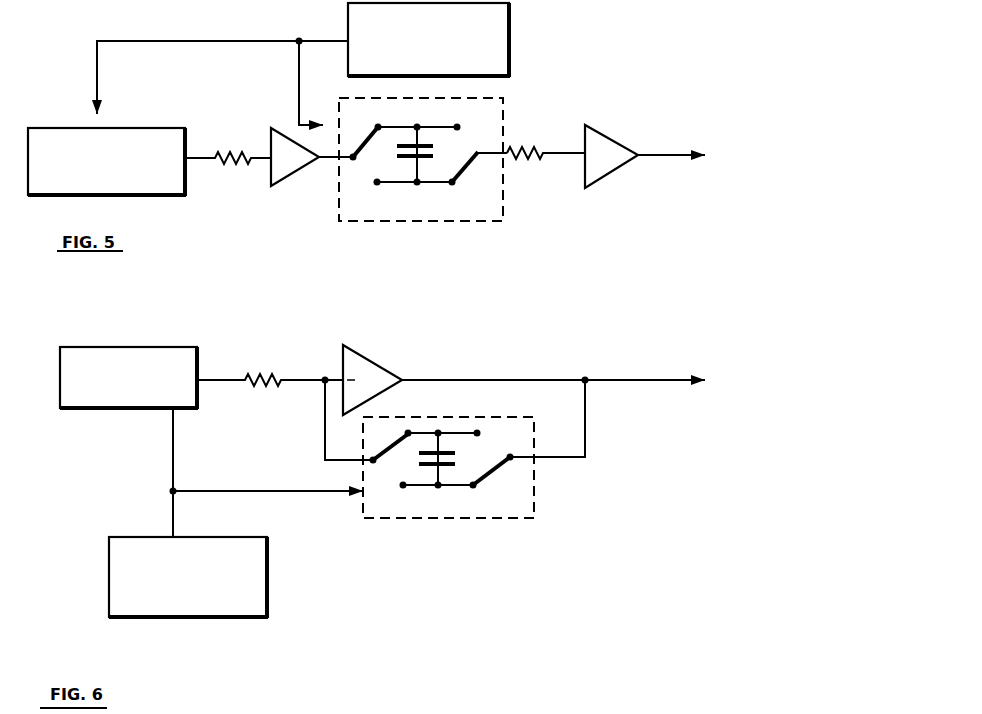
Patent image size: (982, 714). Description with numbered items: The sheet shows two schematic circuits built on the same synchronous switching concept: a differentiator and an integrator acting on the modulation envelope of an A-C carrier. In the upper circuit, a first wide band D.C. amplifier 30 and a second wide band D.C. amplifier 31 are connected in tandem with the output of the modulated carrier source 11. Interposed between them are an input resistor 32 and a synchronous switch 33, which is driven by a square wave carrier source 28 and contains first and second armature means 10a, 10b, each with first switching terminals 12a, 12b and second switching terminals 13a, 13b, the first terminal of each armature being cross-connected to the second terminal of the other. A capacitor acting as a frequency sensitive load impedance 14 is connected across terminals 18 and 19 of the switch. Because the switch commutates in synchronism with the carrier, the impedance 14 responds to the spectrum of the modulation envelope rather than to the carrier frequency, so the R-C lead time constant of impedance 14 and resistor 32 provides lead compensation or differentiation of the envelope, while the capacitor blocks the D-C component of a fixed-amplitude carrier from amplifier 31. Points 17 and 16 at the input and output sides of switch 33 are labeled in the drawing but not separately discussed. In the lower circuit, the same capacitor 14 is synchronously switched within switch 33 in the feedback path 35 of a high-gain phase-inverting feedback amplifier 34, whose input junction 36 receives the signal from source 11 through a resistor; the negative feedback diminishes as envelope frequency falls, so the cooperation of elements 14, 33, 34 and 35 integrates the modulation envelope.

In FIG. 5, the modulated carrier source 11 is at (160, 137).
In FIG. 6, the modulated carrier source 11 is at (153, 347).
In FIG. 5, the carrier source 28 is at (497, 32).
In FIG. 6, the carrier source 28 is at (243, 583).
In FIG. 5, the first wide band D.C. amplifier 30 is at (297, 165).
In FIG. 5, the second wide band D.C. amplifier 31 is at (608, 164).
In FIG. 5, the input resistor 32 is at (535, 153).
In FIG. 5, the synchronous switch 33 is at (492, 210).
In FIG. 6, the synchronous switch 33 is at (500, 508).
In FIG. 6, the high-gain phase-inverting feedback amplifier 34 is at (353, 363).
In FIG. 6, the feedback path 35 is at (325, 418).
In FIG. 6, the summing junction 36 is at (326, 375).
In FIG. 5, the first armature means 10a is at (466, 160).
In FIG. 5, the second armature means 10b is at (368, 142).
In FIG. 5, the first switching terminal 12a is at (380, 125).
In FIG. 5, the first switching terminal 12b is at (455, 184).
In FIG. 5, the second switching terminal 13a is at (376, 185).
In FIG. 5, the second switching terminal 13b is at (460, 125).
In FIG. 5, the frequency sensitive load impedance 14 is at (397, 147).
In FIG. 6, the frequency sensitive load impedance 14 is at (455, 465).
In FIG. 5, the output connection 16 is at (480, 153).
In FIG. 5, the input connection 17 is at (353, 160).
In FIG. 5, the switch terminal 18 is at (420, 124).
In FIG. 5, the switch terminal 19 is at (417, 184).